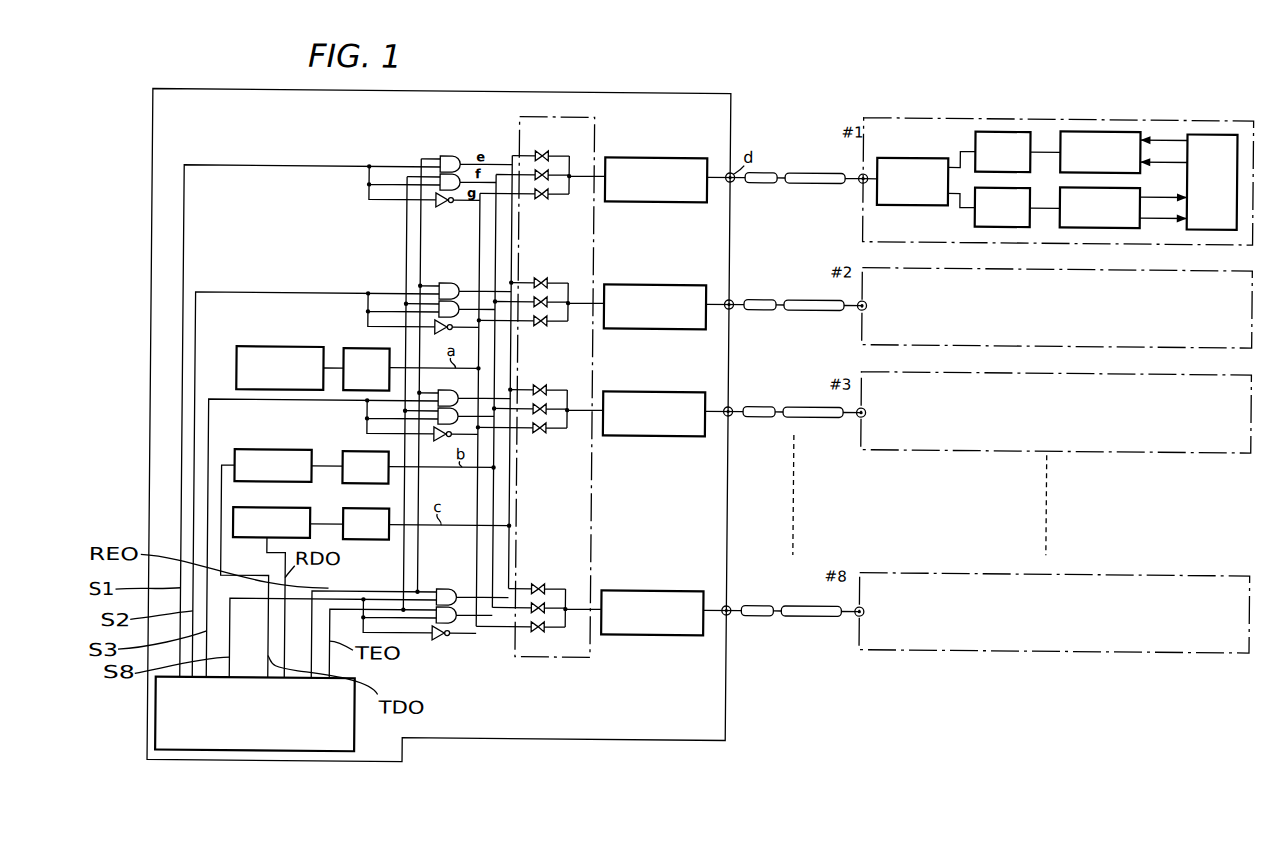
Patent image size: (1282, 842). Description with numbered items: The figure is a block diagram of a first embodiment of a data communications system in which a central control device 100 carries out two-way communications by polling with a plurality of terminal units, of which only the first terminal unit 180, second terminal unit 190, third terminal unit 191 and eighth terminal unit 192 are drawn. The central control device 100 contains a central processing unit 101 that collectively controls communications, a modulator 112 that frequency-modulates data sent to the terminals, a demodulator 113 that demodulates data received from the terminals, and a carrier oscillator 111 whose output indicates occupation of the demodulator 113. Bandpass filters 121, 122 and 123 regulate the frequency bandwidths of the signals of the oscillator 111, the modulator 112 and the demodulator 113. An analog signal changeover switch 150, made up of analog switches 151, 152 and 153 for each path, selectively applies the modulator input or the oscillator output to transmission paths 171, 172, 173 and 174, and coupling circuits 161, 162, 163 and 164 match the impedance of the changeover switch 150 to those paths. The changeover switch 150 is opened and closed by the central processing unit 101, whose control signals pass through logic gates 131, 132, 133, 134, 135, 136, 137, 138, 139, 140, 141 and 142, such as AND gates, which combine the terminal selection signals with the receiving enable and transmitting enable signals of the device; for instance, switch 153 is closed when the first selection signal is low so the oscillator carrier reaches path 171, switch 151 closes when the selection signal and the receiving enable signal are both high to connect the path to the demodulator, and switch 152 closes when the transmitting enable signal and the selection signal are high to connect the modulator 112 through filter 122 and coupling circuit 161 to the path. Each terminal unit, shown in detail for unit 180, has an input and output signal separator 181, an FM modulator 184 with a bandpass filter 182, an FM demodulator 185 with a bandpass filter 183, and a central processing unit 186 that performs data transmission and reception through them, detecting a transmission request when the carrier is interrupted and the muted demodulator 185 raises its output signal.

The central control device 100 is at (532, 739).
The central processing unit 101 is at (262, 752).
The carrier oscillator 111 is at (252, 348).
The modulator 112 is at (248, 451).
The demodulator 113 is at (234, 512).
The bandpass filter 121 is at (352, 349).
The bandpass filter 122 is at (346, 452).
The bandpass filter 123 is at (390, 510).
The logic gate 131 is at (443, 156).
The logic gate 132 is at (447, 174).
The logic gate 133 is at (445, 207).
The logic gate 134 is at (440, 283).
The logic gate 135 is at (440, 301).
The logic gate 136 is at (452, 334).
The logic gate 137 is at (455, 392).
The logic gate 138 is at (458, 425).
The logic gate 139 is at (446, 441).
The logic gate 140 is at (443, 589).
The logic gate 141 is at (455, 623).
The logic gate 142 is at (440, 640).
The analog signal changeover switch 150 is at (553, 151).
The analog switch 151 is at (540, 150).
The analog switch 152 is at (548, 172).
The analog switch 153 is at (545, 199).
The coupling circuit 161 is at (690, 156).
The coupling circuit 162 is at (688, 283).
The coupling circuit 163 is at (687, 390).
The coupling circuit 164 is at (685, 589).
The transmission path 171 is at (784, 170).
The transmission path 172 is at (792, 297).
The transmission path 173 is at (792, 404).
The transmission path 174 is at (758, 603).
The first terminal unit 180 is at (1058, 161).
The input and output signal separator 181 is at (891, 154).
The bandpass filter 182 is at (975, 127).
The bandpass filter 183 is at (973, 216).
The FM modulator 184 is at (1089, 126).
The FM demodulator 185 is at (1089, 222).
The central processing unit 186 is at (1211, 128).
The second terminal unit 190 is at (925, 264).
The third terminal unit 191 is at (909, 368).
The eighth terminal unit 192 is at (891, 569).